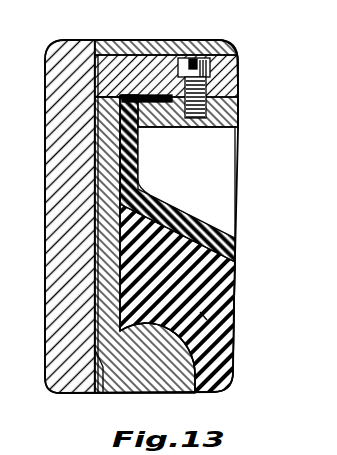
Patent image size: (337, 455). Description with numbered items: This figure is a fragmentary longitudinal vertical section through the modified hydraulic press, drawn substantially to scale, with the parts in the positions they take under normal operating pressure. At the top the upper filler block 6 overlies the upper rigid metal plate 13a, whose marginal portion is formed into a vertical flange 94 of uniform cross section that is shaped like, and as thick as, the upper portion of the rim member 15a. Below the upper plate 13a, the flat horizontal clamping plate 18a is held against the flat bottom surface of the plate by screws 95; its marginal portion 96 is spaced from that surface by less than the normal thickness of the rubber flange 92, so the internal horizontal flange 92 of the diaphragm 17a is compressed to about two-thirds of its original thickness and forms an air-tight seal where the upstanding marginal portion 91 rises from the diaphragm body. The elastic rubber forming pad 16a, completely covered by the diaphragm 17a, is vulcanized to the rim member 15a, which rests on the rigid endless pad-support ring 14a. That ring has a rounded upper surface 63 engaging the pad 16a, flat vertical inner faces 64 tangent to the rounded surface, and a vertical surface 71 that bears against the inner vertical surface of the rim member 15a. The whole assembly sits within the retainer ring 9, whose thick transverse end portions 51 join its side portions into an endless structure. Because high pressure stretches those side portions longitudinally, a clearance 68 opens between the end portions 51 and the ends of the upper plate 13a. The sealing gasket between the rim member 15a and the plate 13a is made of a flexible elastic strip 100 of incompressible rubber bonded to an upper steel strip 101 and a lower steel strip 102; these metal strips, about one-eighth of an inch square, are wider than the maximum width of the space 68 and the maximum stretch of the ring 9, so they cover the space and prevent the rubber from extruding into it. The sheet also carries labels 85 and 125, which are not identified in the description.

The clearance 68 is at (95, 88).
The upper filler block 6 is at (146, 42).
The screws 95 is at (204, 62).
The upper rigid metal plate 13a is at (237, 72).
The internal horizontal flange 92 is at (143, 94).
The vertical flange 94 is at (108, 110).
The upper steel strip 101 is at (100, 147).
The flexible elastic strip 100 is at (97, 155).
The lower steel strip 102 is at (105, 170).
The upstanding marginal portion 91 is at (138, 141).
The marginal portion of clamping plate 96 is at (180, 128).
The clamping plate 18a is at (236, 131).
The seal 85 is at (138, 208).
The transverse portions 51 is at (53, 218).
The diaphragm 17a is at (218, 224).
The rim member 15a is at (100, 250).
The forming pad 16a is at (282, 309).
The rounded upper surface 63 is at (192, 309).
The vertical surface 71 is at (95, 350).
The retainer ring 9 is at (44, 425).
The pad-support ring 14a is at (149, 383).
The flat vertical inner faces 64 is at (204, 390).
The base 125 is at (106, 422).